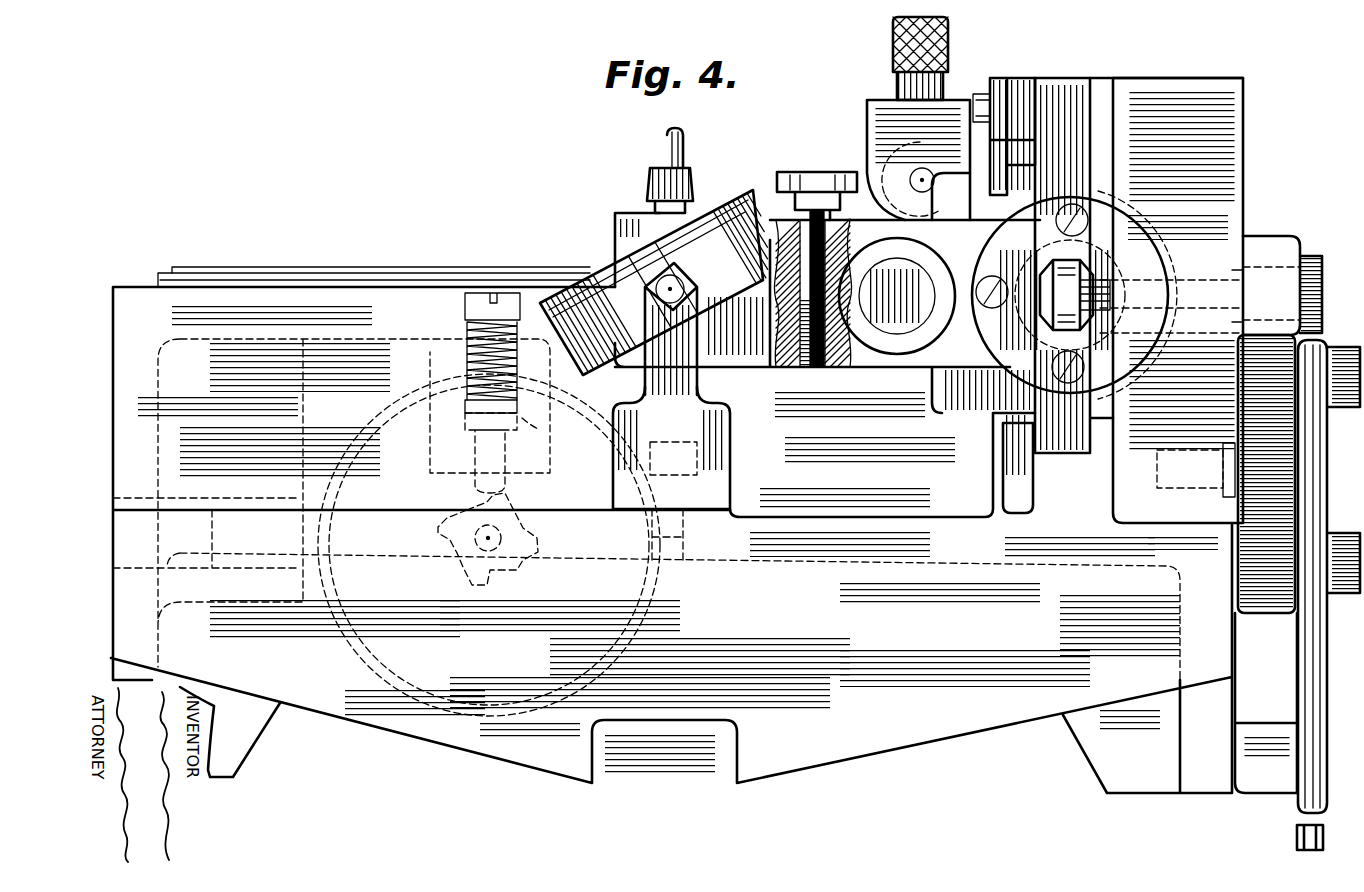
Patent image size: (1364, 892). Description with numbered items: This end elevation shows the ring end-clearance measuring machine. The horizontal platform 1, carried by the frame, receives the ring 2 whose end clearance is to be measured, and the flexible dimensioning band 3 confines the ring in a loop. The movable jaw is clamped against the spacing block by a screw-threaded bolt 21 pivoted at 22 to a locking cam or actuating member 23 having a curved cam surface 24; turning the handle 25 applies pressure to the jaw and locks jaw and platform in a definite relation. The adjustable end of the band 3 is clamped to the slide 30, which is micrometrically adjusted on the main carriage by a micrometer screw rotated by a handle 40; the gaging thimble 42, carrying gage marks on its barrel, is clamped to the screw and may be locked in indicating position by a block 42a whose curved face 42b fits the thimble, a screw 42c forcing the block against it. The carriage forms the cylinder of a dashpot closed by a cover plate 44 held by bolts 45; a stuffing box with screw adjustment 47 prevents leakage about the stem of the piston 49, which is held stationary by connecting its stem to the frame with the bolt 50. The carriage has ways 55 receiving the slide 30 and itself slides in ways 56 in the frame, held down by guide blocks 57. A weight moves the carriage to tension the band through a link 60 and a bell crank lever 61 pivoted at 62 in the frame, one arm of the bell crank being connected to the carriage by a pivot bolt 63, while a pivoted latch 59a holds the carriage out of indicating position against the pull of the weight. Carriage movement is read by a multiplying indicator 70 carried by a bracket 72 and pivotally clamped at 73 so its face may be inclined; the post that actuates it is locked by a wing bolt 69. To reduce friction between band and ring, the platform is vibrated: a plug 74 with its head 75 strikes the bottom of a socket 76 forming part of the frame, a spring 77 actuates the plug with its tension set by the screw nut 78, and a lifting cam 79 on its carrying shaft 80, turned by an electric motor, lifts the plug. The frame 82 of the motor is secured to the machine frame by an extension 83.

The horizontal platform 1 is at (128, 292).
The ring 2 is at (238, 272).
The flexible dimensioning band 3 is at (305, 273).
The screw-threaded bolt 21 is at (885, 178).
The pivot 22 is at (910, 165).
The locking cam or actuating member 23 is at (867, 108).
The cam or curved surface 24 is at (905, 195).
The handle 25 is at (893, 40).
The slide or clamp 30 is at (768, 368).
The handle 40 is at (912, 305).
The gaging thimble 42 is at (830, 367).
The block 42a is at (797, 247).
The curved face 42b is at (861, 292).
The screw 42c is at (825, 175).
The cover plate 44 is at (1165, 318).
The bolts 45 is at (1057, 222).
The screw adjustment 47 is at (1045, 268).
The piston 49 is at (1112, 308).
The bolt 50 is at (1108, 295).
The ways 55 is at (945, 380).
The ways 56 is at (1080, 128).
The guide blocks 57 is at (1025, 90).
The pivoted latch 59a is at (998, 92).
The link 60 is at (1310, 700).
The bell crank lever 61 is at (1265, 614).
The pivot 62 is at (1195, 486).
The pivot bolt 63 is at (1322, 276).
The wing bolt 69 is at (684, 145).
The multiplying indicator 70 is at (597, 273).
The bracket 72 is at (730, 465).
The pivotal clamp 73 is at (655, 312).
The plug 74 is at (475, 465).
The head 75 is at (517, 425).
The socket 76 is at (428, 440).
The spring 77 is at (467, 335).
The screw nut 78 is at (465, 305).
The lifting cam 79 is at (448, 535).
The carrying shaft 80 is at (525, 535).
The frame of the motor 82 is at (683, 537).
The extension 83 is at (210, 545).